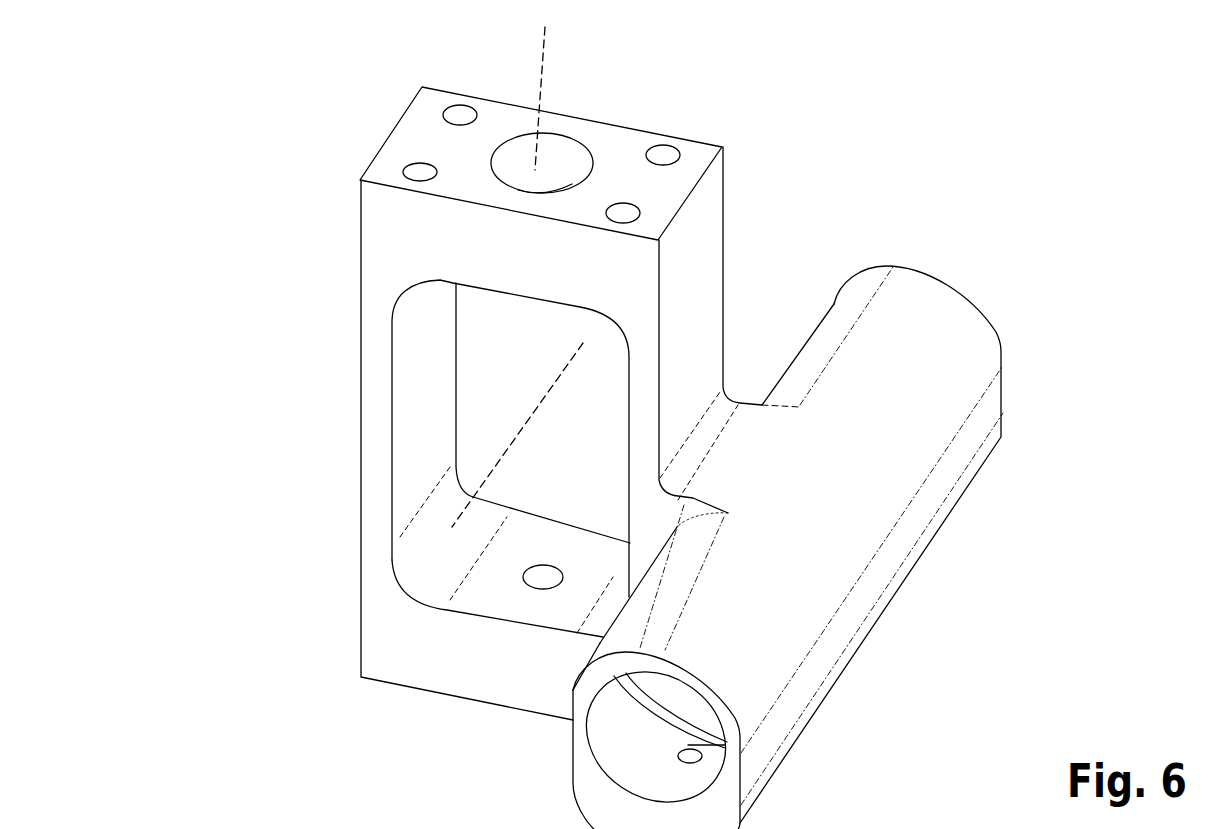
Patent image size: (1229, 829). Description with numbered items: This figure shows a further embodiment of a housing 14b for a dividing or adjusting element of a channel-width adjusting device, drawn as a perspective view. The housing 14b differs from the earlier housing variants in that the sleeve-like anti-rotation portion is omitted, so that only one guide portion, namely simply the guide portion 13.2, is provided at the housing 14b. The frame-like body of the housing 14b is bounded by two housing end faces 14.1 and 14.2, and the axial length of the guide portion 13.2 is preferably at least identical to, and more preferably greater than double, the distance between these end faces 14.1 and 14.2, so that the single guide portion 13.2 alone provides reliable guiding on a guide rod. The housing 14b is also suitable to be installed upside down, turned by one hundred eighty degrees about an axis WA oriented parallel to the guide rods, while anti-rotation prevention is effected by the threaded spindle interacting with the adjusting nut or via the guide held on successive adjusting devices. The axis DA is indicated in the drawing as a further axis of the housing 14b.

The guide portion 13.2 is at (940, 395).
The housing 14b is at (659, 413).
The housing end face 14.1 is at (730, 283).
The housing end face 14.2 is at (393, 633).
The rotation axis DA is at (545, 88).
The axis WA is at (548, 393).